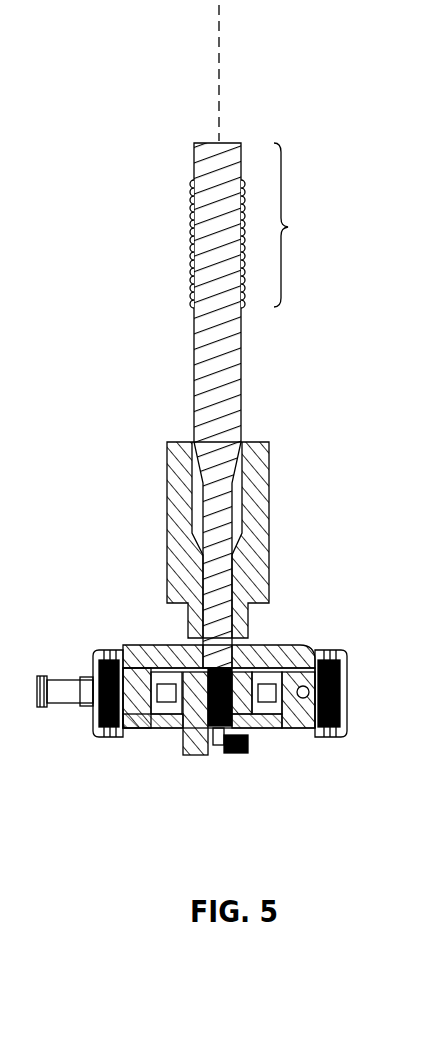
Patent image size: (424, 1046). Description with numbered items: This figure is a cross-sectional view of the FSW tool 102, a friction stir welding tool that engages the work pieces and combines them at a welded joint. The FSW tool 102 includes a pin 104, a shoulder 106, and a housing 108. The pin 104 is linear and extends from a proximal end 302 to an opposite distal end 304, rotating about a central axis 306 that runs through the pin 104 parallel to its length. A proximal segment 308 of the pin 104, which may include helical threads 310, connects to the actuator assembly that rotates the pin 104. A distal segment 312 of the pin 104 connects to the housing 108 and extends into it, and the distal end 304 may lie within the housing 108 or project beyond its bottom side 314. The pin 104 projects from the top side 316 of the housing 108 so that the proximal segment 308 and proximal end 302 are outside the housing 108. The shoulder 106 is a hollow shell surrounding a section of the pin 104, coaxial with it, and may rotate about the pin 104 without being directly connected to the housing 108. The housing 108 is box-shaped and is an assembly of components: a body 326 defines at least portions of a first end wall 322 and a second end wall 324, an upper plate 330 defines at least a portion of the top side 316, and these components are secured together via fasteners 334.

The FSW tool 102 is at (104, 191).
The pin 104 is at (203, 385).
The shoulder 106 is at (270, 505).
The housing 108 is at (340, 693).
The proximal end 302 is at (194, 131).
The distal end 304 is at (207, 758).
The central axis 306 is at (221, 45).
The proximal segment 308 is at (312, 225).
The helical threads 310 is at (193, 238).
The distal segment 312 is at (268, 710).
The bottom side 314 is at (172, 730).
The top side 316 is at (148, 650).
The first end wall 322 is at (92, 716).
The second end wall 324 is at (343, 707).
The body 326 is at (137, 692).
The upper plate 330 is at (268, 645).
The fasteners 334 is at (100, 655).